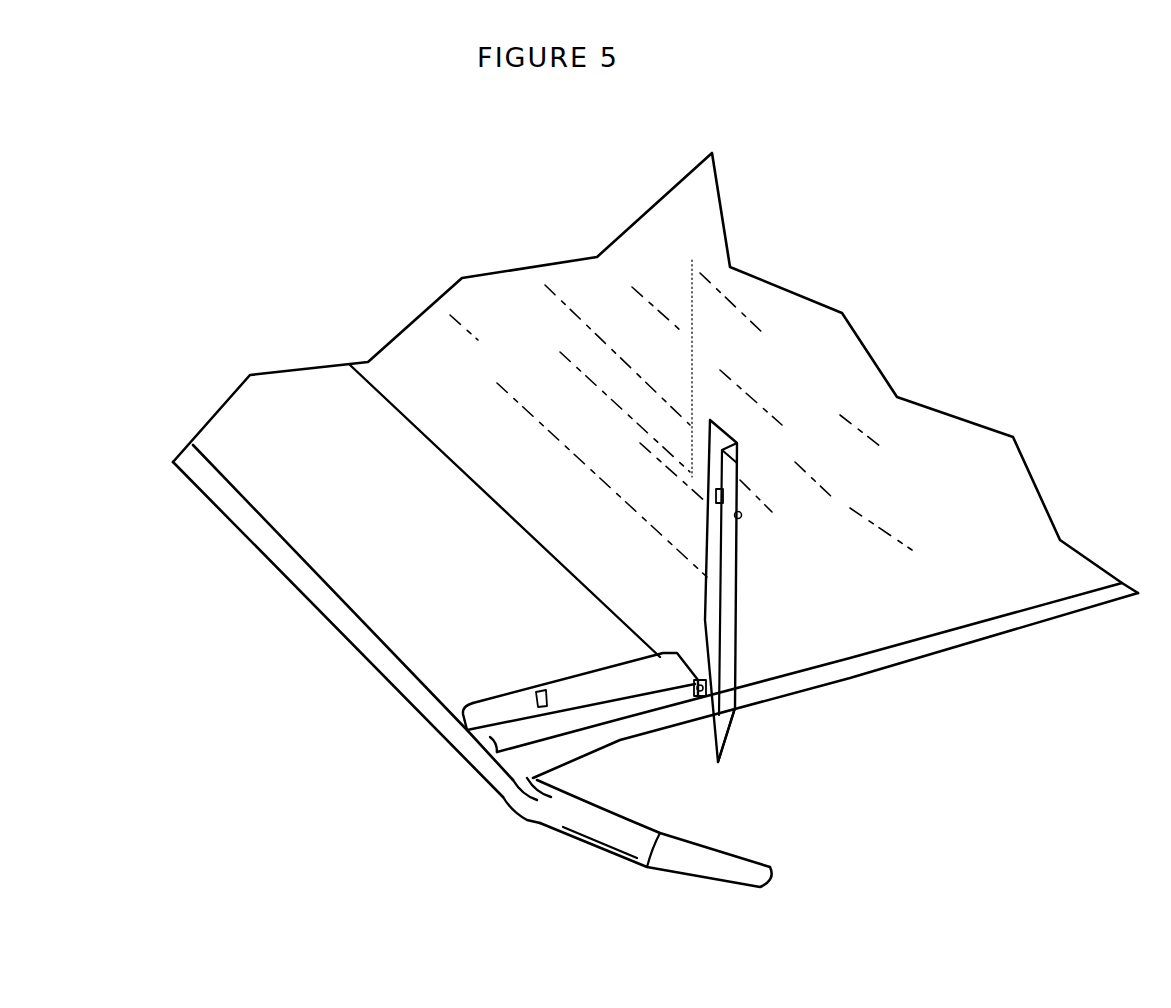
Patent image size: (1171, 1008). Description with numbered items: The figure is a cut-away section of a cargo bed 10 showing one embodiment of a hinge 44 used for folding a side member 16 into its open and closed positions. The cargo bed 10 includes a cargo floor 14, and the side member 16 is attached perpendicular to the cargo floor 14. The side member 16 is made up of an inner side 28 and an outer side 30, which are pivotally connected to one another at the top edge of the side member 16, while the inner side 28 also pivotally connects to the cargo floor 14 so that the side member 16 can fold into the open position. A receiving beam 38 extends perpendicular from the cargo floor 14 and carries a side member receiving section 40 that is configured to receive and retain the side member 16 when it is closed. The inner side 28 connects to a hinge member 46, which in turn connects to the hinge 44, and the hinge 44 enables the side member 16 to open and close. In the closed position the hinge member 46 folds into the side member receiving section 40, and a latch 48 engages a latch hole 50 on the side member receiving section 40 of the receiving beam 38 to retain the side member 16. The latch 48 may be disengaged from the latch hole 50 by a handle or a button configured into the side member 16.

The cargo bed 10 is at (432, 190).
The cargo floor 14 is at (941, 596).
The side member 16 is at (316, 616).
The inner side 28 is at (516, 656).
The outer side 30 is at (540, 823).
The receiving beam 38 is at (738, 433).
The side member receiving section 40 is at (707, 607).
The hinge 44 is at (730, 717).
The hinge member 46 is at (620, 682).
The latch 48 is at (533, 693).
The latch hole 50 is at (740, 522).